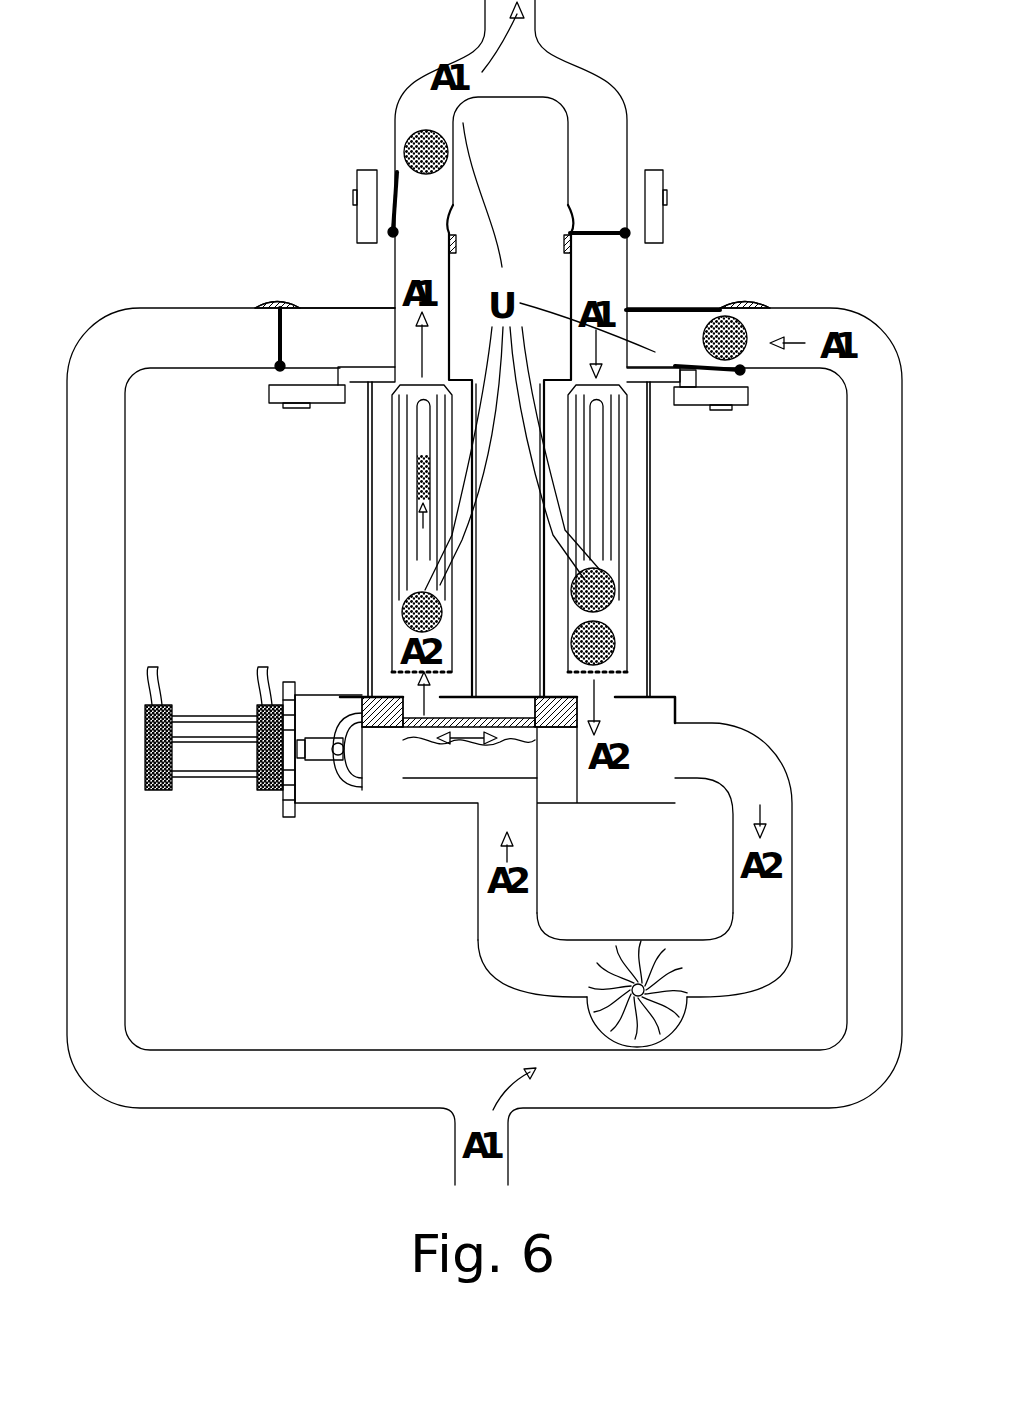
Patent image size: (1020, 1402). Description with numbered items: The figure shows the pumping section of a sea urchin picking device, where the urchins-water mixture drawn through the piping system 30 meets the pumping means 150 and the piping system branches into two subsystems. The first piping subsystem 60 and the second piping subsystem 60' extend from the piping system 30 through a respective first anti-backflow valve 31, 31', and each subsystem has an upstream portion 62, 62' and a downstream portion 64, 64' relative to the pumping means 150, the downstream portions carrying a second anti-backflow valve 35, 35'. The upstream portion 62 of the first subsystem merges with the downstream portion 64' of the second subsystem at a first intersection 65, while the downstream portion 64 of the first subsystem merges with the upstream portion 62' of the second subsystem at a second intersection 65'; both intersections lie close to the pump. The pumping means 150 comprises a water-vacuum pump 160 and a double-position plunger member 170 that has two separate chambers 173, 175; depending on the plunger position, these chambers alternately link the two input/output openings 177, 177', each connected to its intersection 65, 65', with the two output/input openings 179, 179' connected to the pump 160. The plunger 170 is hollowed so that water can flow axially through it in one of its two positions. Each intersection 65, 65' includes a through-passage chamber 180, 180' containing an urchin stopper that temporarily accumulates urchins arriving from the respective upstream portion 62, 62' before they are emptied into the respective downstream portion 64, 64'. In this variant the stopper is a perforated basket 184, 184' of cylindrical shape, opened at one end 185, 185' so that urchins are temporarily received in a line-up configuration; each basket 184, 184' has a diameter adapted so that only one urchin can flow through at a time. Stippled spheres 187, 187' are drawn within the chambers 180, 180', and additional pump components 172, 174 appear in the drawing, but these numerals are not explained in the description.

The piping system 30 is at (140, 305).
The first anti-backflow valve 31 is at (693, 408).
The first anti-backflow valve 31' is at (277, 383).
The second anti-backflow valve 35 is at (711, 199).
The second anti-backflow valve 35' is at (311, 199).
The first piping subsystem 60 is at (685, 236).
The second piping subsystem 60' is at (364, 142).
The upstream portion 62 is at (654, 240).
The upstream portion 62' is at (332, 217).
The downstream portion 64 is at (742, 285).
The downstream portion 64' is at (275, 277).
The first intersection 65 is at (679, 277).
The second intersection 65' is at (347, 291).
The pumping means 150 is at (760, 650).
The water-vacuum pump 160 is at (603, 1013).
The double-position plunger member 170 is at (235, 772).
The cylinder 172 is at (388, 795).
The chamber 173 is at (507, 707).
The outlet chamber 174 is at (558, 780).
The chamber 175 is at (622, 783).
The input/output opening 177 is at (588, 660).
The input/output opening 177' is at (324, 671).
The output/input opening 179 is at (686, 841).
The output/input opening 179' is at (489, 898).
The through-passage chamber 180 is at (702, 539).
The through-passage chamber 180' is at (315, 539).
The perforated basket 184 is at (661, 480).
The perforated basket 184' is at (354, 480).
The open end 185 is at (656, 528).
The open end 185' is at (360, 525).
The check ball 187 is at (644, 616).
The check ball 187' is at (368, 620).